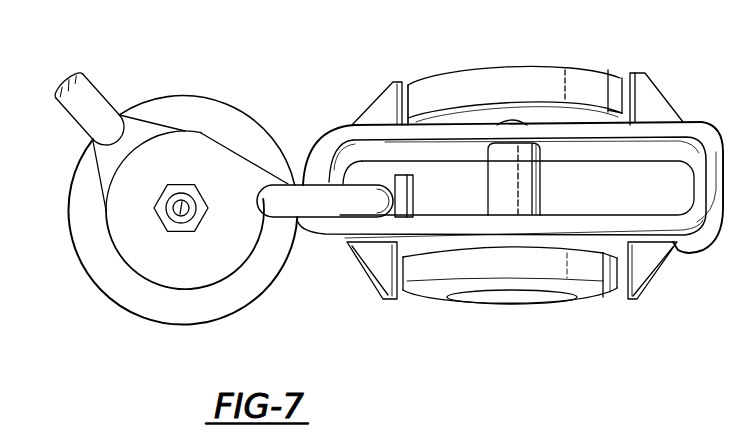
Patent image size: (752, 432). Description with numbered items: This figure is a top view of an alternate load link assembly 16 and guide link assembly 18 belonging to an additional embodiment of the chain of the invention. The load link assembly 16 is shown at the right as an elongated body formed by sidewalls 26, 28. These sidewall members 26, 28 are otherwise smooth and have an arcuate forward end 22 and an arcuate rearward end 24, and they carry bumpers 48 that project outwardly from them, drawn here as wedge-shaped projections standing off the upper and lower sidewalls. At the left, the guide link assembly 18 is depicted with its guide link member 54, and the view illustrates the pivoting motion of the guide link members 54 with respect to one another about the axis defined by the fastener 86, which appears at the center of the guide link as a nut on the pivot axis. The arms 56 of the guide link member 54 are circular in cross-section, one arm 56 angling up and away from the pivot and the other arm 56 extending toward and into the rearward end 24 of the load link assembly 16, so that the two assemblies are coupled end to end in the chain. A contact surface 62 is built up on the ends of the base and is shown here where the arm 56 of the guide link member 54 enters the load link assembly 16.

The load link assembly 16 is at (697, 276).
The guide link assembly 18 is at (163, 327).
The forward end 22 is at (692, 182).
The rearward end 24 is at (317, 162).
The sidewall 26 is at (616, 236).
The sidewall 28 is at (602, 145).
The bumper 48 is at (378, 300).
The guide link member 54 is at (75, 122).
The arm 56 is at (101, 108).
The contact surface 62 is at (405, 200).
The fastener 86 is at (183, 207).